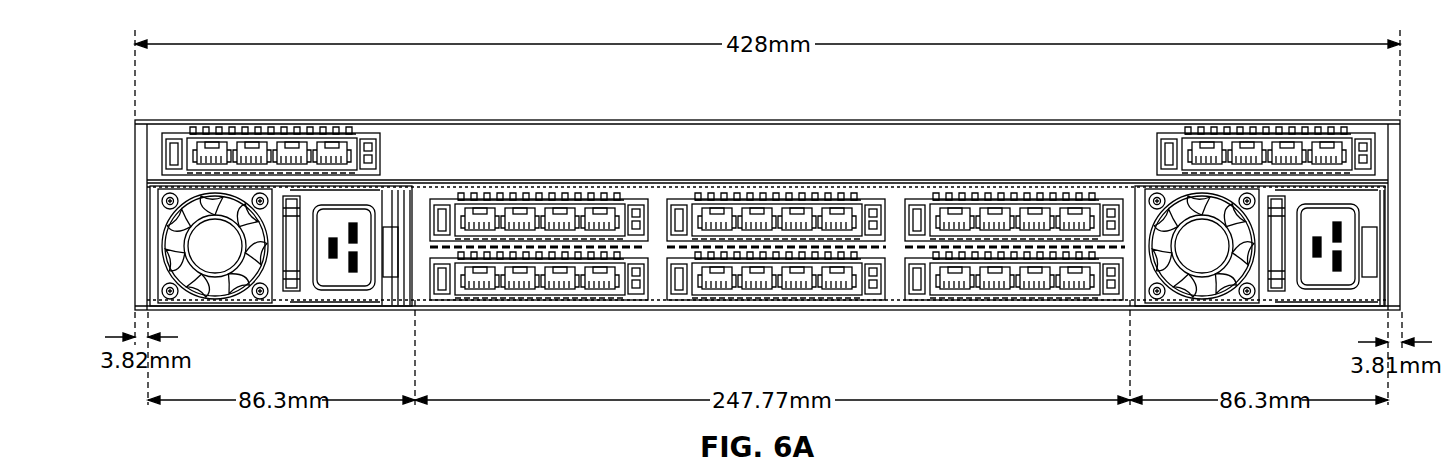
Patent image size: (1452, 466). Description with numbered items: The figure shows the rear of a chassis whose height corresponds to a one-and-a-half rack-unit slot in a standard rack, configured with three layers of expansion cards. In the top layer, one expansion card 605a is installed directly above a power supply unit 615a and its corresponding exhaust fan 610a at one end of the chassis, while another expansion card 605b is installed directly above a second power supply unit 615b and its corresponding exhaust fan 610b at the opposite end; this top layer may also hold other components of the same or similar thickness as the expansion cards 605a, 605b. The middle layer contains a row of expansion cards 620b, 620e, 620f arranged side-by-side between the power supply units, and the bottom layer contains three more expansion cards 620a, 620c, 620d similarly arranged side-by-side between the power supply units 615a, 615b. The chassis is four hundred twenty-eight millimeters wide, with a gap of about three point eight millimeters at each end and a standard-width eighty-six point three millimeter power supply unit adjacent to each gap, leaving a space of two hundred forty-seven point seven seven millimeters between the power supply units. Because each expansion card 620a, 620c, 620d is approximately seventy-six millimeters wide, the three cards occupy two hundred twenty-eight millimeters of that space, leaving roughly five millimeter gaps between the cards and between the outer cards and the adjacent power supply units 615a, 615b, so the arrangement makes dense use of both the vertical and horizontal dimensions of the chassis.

The expansion card 605a is at (338, 128).
The expansion card 605b is at (1265, 128).
The exhaust fan 610a is at (156, 212).
The exhaust fan 610b is at (1140, 200).
The power supply unit 615a is at (392, 195).
The power supply unit 615b is at (1378, 217).
The expansion card 620a is at (570, 290).
The expansion card 620b is at (500, 235).
The expansion card 620c is at (808, 285).
The expansion card 620d is at (738, 233).
The expansion card 620e is at (1045, 287).
The expansion card 620f is at (975, 230).